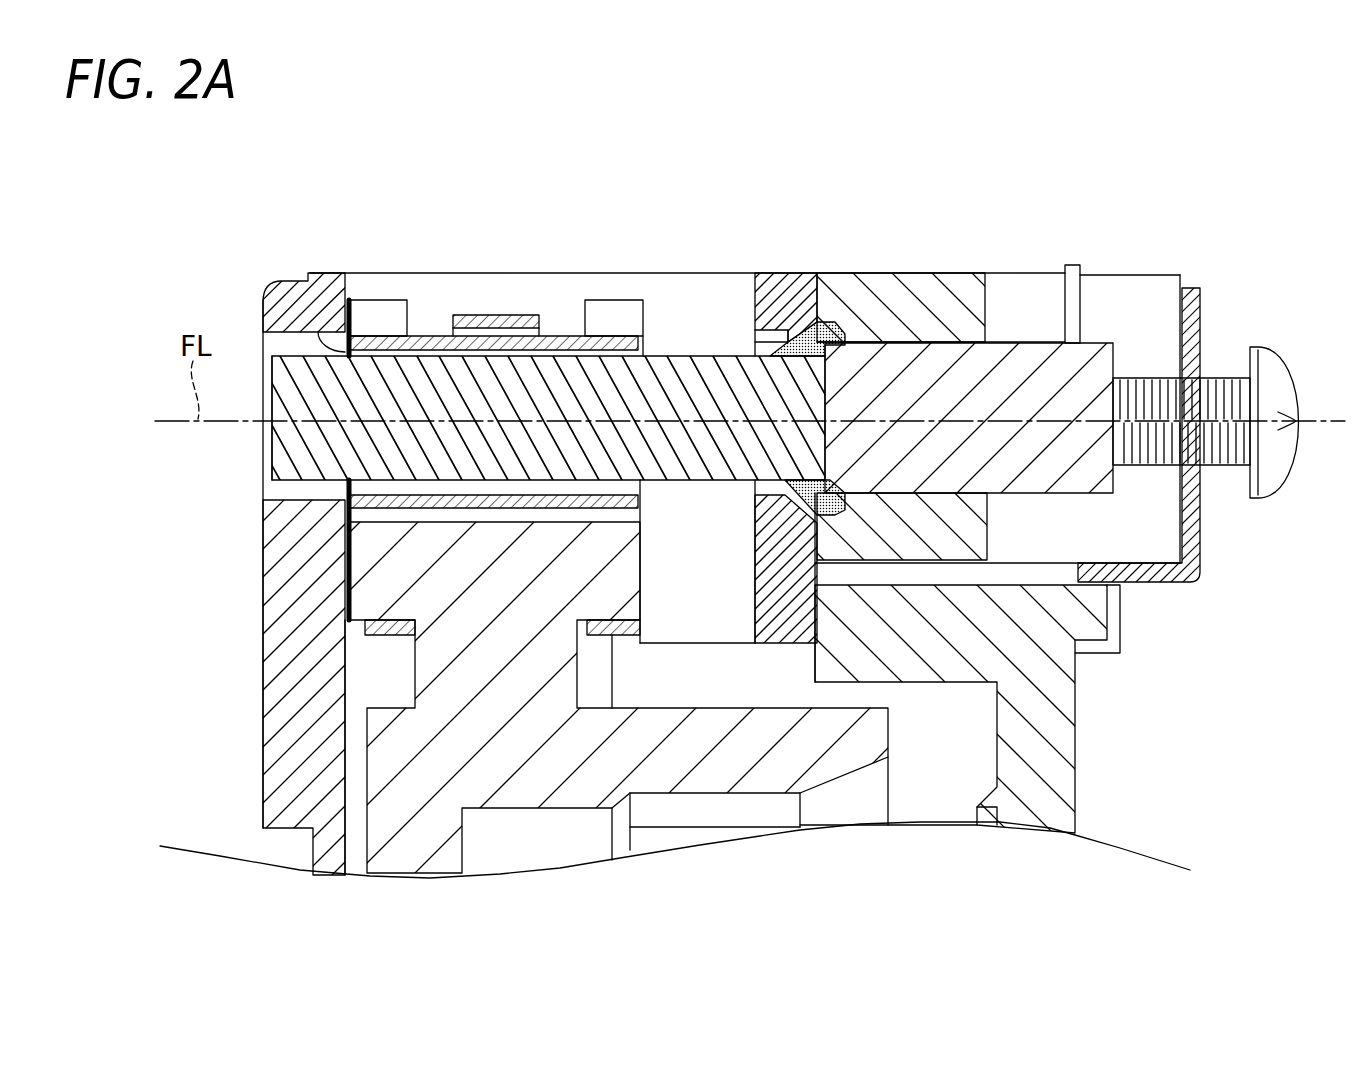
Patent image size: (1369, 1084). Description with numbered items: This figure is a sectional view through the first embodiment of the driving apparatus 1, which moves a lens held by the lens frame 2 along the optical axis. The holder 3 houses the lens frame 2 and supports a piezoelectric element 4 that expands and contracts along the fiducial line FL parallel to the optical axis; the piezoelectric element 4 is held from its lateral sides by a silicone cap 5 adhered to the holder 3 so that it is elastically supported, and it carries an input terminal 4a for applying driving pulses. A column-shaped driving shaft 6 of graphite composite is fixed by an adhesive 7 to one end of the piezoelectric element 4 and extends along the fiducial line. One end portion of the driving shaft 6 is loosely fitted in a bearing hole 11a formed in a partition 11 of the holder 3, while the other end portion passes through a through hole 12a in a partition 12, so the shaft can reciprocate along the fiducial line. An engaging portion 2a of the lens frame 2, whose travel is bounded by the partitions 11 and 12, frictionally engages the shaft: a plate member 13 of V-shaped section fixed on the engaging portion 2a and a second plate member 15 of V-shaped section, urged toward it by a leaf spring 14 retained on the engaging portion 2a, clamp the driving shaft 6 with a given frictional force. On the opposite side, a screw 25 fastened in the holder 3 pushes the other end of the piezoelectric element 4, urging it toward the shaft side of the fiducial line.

The driving apparatus 1 is at (1221, 230).
The lens frame 2 is at (412, 862).
The engaging portion 2a is at (621, 582).
The holder 3 is at (1200, 320).
The piezoelectric element 4 is at (1010, 342).
The input terminal 4a is at (1082, 298).
The silicone cap 5 is at (900, 282).
The driving shaft 6 is at (696, 355).
The adhesive 7 is at (840, 324).
The partition 11 is at (320, 272).
The bearing hole 11a is at (365, 349).
The partition 12 is at (788, 283).
The through hole 12a is at (755, 342).
The plate member 13 is at (638, 505).
The leaf spring 14 is at (483, 315).
The plate member 15 is at (560, 335).
The screw 25 is at (1143, 468).